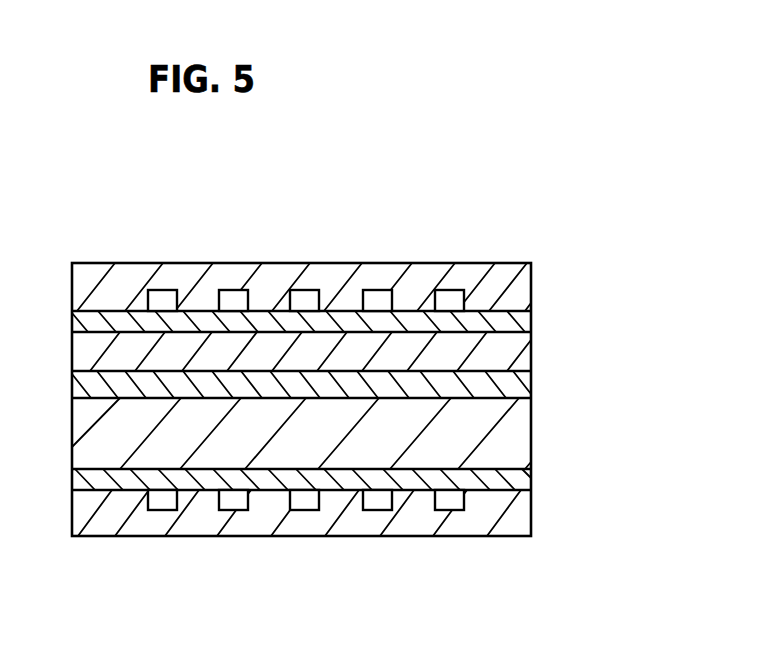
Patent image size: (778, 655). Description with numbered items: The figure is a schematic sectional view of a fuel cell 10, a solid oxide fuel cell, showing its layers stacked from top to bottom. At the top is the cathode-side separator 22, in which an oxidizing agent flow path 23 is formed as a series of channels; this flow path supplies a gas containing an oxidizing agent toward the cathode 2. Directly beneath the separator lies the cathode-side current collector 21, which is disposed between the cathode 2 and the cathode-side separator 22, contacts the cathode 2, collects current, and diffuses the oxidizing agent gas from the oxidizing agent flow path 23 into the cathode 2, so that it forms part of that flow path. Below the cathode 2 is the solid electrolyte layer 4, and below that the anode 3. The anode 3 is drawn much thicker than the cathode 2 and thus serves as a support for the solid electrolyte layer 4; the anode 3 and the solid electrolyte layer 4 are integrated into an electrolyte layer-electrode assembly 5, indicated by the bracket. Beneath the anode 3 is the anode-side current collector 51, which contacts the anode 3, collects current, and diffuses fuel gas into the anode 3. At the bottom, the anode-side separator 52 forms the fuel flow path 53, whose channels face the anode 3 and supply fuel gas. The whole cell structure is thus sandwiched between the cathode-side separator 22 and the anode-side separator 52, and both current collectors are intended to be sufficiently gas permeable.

The fuel cell 10 is at (535, 226).
The cathode-side separator 22 is at (532, 272).
The oxidizing agent flow path 23 is at (230, 297).
The cathode-side current collector 21 is at (382, 318).
The cathode 2 is at (510, 345).
The solid electrolyte layer 4 is at (512, 383).
The anode 3 is at (334, 434).
The electrolyte layer-electrode assembly 5 is at (361, 417).
The anode-side current collector 51 is at (137, 477).
The anode-side separator 52 is at (515, 515).
The fuel flow path 53 is at (305, 500).